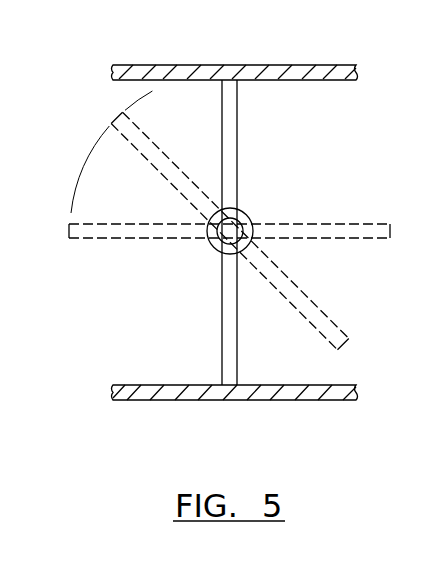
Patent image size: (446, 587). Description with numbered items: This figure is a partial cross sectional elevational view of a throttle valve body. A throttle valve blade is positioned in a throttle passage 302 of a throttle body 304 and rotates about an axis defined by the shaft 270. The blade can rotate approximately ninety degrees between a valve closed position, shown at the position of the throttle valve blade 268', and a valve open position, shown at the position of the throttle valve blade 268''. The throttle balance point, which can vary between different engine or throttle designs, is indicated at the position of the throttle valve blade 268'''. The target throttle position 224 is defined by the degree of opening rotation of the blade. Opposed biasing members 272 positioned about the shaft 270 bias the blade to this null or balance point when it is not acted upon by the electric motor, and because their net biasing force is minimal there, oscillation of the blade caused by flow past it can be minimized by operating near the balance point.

The target throttle position 224 is at (103, 133).
The throttle valve blade in valve closed position 268' is at (274, 232).
The throttle valve blade in valve open position 268'' is at (239, 204).
The throttle valve blade at throttle balance point 268''' is at (188, 231).
The shaft 270 is at (246, 234).
The opposed biasing members 272 is at (238, 212).
The throttle passage 302 is at (258, 213).
The throttle body 304 is at (283, 65).